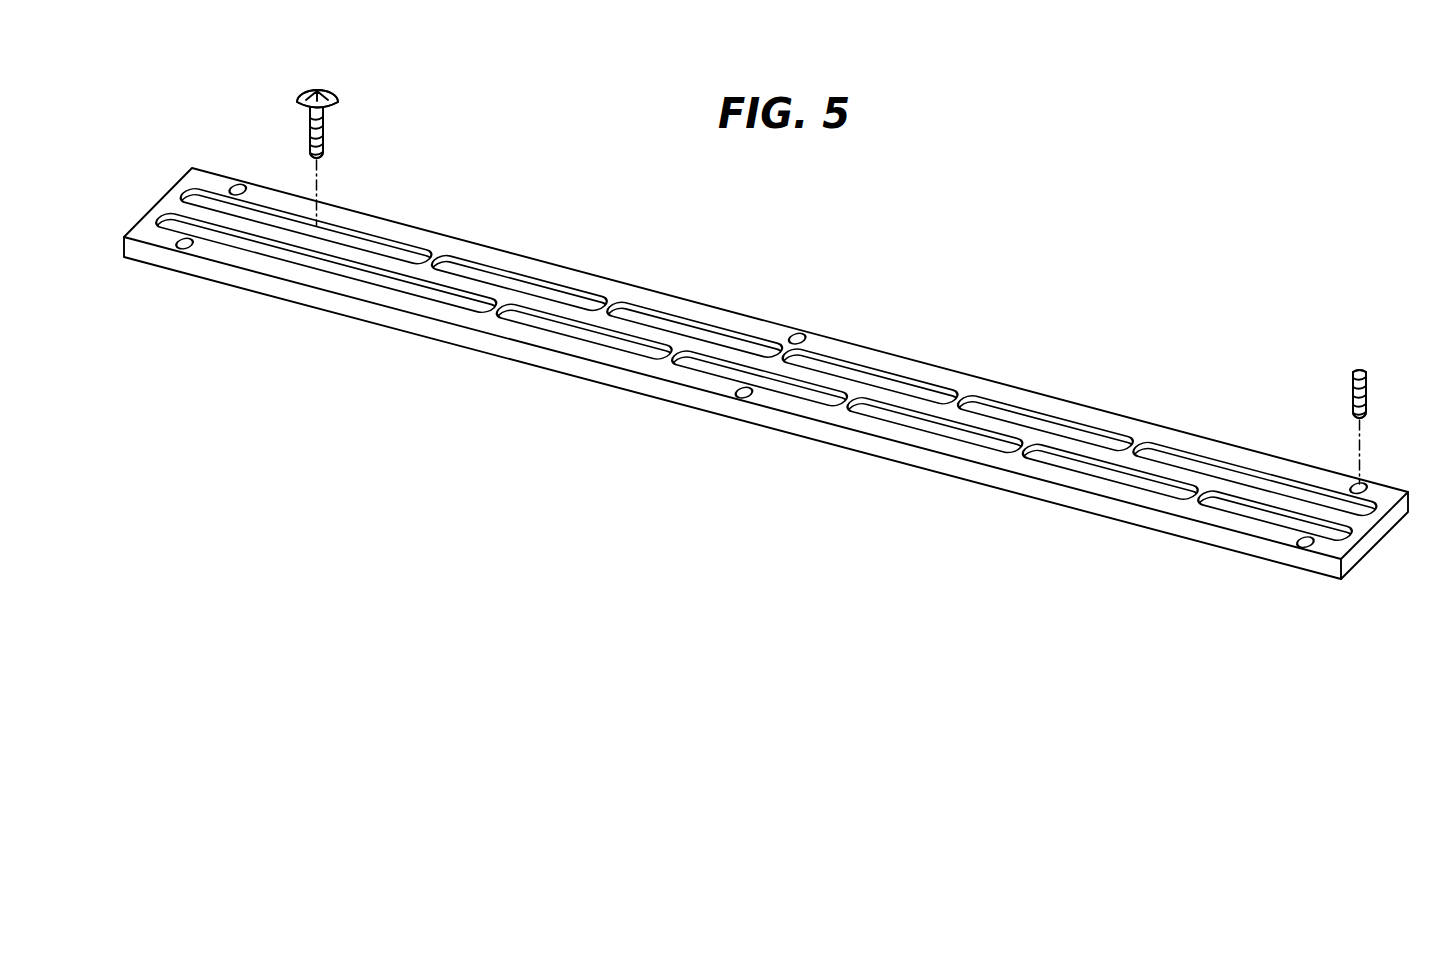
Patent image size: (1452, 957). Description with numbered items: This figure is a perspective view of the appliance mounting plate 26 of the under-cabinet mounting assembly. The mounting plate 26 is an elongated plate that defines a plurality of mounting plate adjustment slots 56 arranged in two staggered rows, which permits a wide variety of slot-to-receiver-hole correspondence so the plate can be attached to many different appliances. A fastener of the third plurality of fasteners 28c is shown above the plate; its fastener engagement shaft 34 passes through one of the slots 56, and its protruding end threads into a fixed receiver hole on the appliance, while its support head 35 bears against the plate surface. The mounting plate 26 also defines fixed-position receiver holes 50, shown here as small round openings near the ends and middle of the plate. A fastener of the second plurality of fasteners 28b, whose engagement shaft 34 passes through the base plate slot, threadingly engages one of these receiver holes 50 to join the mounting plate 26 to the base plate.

The appliance mounting plate 26 is at (747, 307).
The second plurality of fasteners 28b is at (1360, 360).
The third plurality of fasteners 28c is at (324, 78).
The fastener engagement shaft 34 is at (324, 137).
The support head 35 is at (339, 106).
The receiver hole 50 is at (737, 397).
The mounting plate adjustment slot 56 is at (397, 240).